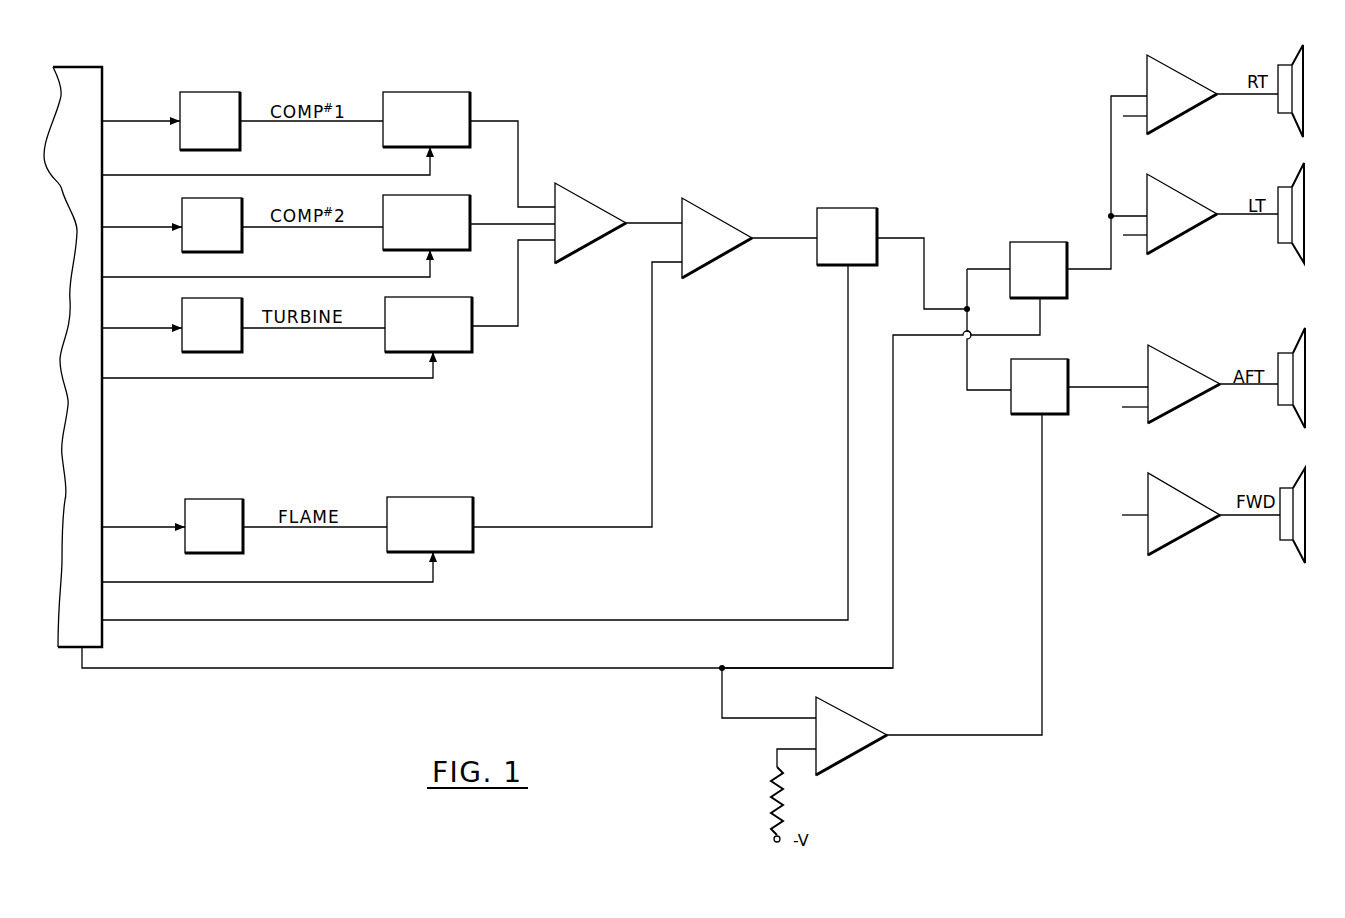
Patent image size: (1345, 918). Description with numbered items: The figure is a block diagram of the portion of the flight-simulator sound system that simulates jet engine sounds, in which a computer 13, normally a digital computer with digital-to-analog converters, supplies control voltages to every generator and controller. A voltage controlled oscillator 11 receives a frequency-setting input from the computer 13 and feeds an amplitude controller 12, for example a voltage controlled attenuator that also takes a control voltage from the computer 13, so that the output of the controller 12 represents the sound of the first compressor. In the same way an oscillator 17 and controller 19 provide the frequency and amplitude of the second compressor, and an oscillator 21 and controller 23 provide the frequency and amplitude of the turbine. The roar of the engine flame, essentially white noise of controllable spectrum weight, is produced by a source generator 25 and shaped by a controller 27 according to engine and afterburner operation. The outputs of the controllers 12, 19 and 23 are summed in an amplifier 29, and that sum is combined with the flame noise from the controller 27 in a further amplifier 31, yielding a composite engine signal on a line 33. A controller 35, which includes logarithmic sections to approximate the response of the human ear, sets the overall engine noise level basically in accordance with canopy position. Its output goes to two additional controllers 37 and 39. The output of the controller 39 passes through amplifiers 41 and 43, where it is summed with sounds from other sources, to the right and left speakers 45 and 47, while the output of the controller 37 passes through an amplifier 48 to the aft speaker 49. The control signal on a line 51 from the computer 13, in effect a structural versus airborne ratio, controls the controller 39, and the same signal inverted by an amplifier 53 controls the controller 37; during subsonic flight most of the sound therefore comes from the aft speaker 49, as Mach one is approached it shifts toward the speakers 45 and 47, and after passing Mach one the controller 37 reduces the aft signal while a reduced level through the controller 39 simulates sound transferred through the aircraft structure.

The voltage controlled oscillator 11 is at (228, 94).
The amplitude controller 12 is at (455, 94).
The computer 13 is at (93, 85).
The oscillator 17 is at (228, 212).
The controller 19 is at (453, 197).
The oscillator 21 is at (227, 310).
The controller 23 is at (450, 300).
The source generator 25 is at (230, 506).
The controller 27 is at (448, 504).
The amplifier 29 is at (588, 211).
The amplifier 31 is at (722, 222).
The line 33 is at (789, 240).
The controller 35 is at (862, 208).
The controller 37 is at (1020, 415).
The controller 39 is at (1022, 242).
The amplifier 41 is at (1172, 80).
The amplifier 43 is at (1180, 205).
The right speaker 45 is at (1288, 62).
The left speaker 47 is at (1287, 187).
The amplifier 48 is at (1172, 368).
The aft speaker 49 is at (1286, 353).
The line 51 is at (795, 667).
The amplifier 53 is at (857, 718).